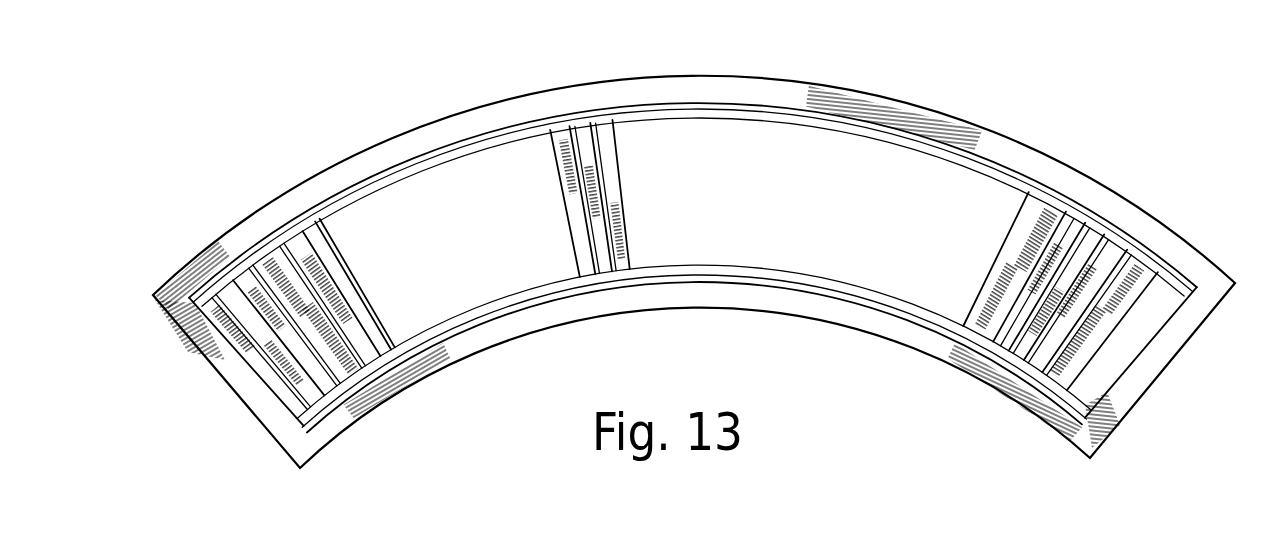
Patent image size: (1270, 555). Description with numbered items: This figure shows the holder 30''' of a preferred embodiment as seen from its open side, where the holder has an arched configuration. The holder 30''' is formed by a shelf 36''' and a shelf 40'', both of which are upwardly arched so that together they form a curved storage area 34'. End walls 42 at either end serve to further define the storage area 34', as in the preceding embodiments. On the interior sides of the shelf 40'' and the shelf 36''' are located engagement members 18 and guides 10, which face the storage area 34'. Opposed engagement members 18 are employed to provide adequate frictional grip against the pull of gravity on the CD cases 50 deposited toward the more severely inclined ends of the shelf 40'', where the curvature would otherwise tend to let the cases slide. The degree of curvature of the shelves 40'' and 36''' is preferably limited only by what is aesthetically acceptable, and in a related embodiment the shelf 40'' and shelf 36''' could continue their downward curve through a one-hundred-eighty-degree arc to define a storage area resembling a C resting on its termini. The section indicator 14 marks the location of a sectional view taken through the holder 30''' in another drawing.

The holder 30''' is at (694, 272).
The shelf 36''' is at (693, 223).
The shelf 40'' is at (713, 365).
The curved storage area 34' is at (693, 339).
The end walls 42 is at (242, 373).
The CD cases 50 is at (562, 178).
The engagement members 18 is at (717, 115).
The guides 10 is at (772, 113).
The section line 14 is at (1131, 137).